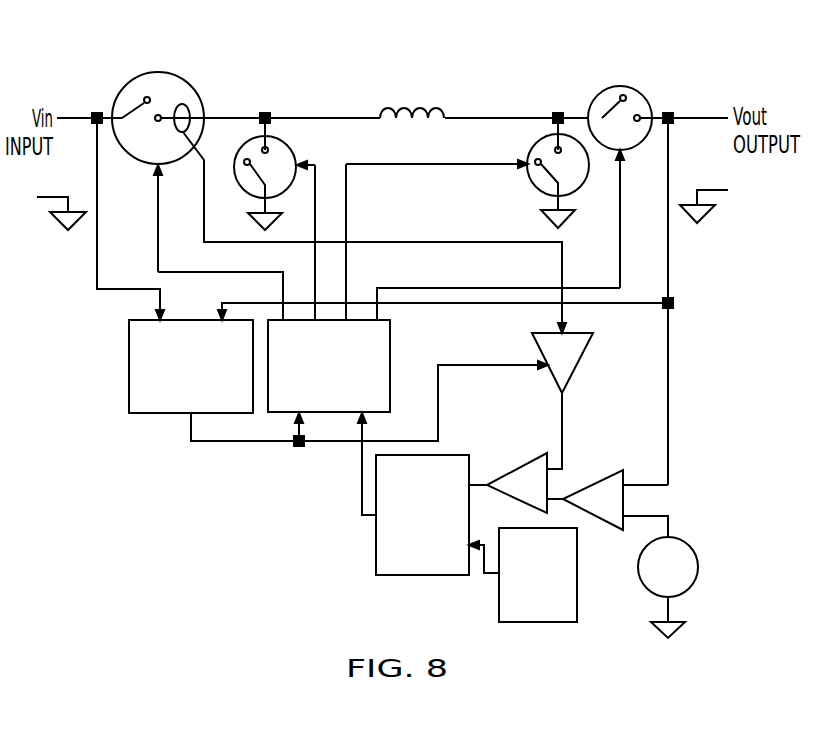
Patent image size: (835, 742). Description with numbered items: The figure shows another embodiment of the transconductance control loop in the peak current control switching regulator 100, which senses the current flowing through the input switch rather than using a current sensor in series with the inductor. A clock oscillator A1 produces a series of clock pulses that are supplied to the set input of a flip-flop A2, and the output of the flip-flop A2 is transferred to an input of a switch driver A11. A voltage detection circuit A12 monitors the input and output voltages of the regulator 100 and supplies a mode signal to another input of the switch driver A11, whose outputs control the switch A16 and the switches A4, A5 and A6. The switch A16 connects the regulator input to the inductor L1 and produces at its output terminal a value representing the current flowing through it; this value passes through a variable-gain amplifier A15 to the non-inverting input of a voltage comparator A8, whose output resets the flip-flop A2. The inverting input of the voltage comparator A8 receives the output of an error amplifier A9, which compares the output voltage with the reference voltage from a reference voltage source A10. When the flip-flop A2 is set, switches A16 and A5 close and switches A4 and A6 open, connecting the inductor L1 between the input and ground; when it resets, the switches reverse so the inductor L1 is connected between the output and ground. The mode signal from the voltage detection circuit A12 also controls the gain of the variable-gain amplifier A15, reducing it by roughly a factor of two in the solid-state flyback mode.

The peak current control switching regulator 100 is at (626, 63).
The switch A16 is at (339, 202).
The switch A4 is at (274, 174).
The inductor L1 is at (412, 100).
The switch A5 is at (467, 173).
The switch A6 is at (620, 187).
The voltage detection circuit A12 is at (191, 366).
The switch driver A11 is at (329, 366).
The variable-gain amplifier A15 is at (562, 401).
The voltage comparator A8 is at (516, 483).
The error amplifier A9 is at (615, 503).
The reference voltage source A10 is at (668, 587).
The flip-flop A2 is at (422, 515).
The clock oscillator A1 is at (523, 575).